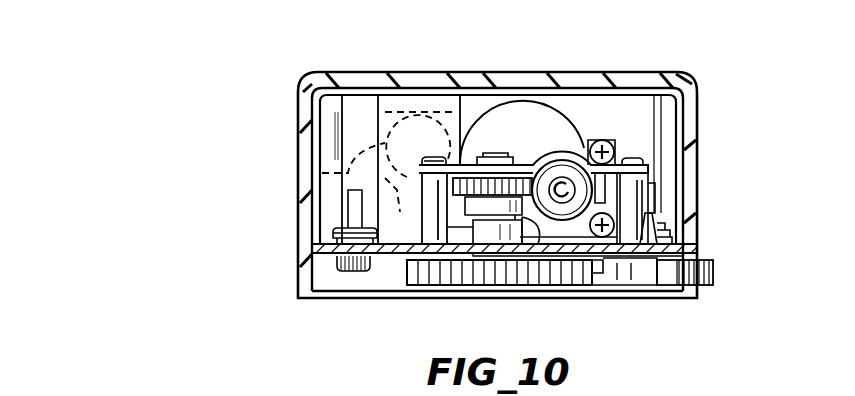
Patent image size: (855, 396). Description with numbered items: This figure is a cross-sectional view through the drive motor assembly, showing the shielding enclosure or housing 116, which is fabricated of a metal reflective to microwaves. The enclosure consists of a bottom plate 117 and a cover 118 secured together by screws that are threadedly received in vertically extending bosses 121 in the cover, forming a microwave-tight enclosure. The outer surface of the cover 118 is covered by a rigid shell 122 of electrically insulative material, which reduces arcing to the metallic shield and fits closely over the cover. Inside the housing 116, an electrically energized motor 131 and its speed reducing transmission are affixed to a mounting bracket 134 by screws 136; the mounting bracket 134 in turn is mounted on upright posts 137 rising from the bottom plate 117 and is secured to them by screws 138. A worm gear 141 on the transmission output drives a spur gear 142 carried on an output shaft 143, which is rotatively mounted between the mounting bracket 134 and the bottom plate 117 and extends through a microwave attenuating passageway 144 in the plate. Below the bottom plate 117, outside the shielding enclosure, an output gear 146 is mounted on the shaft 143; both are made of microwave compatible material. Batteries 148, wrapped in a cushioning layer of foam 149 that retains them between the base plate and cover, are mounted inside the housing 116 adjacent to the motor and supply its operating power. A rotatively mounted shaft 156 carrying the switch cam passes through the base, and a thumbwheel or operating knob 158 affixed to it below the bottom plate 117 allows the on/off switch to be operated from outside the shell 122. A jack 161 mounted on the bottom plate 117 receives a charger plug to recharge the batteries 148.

The shielding enclosure or housing 116 is at (312, 83).
The cover 118 is at (353, 92).
The vertically extending bosses 121 is at (330, 120).
The rigid shell 122 is at (377, 93).
The electrically energized motor 131 is at (494, 112).
The mounting bracket 134 is at (655, 177).
The screws 136 is at (606, 140).
The upright posts 137 is at (430, 207).
The screws 138 is at (431, 157).
The worm gear 141 is at (562, 162).
The spur gear 142 is at (522, 155).
The output shaft 143 is at (470, 262).
The microwave attenuating passageway 144 is at (523, 220).
The output gear 146 is at (497, 273).
The batteries 148 is at (320, 176).
The layer of foam 149 is at (385, 103).
The rotatively mounted shaft 156 is at (657, 208).
The thumbwheel or operating knob 158 is at (710, 287).
The jack 161 is at (340, 271).
The bottom plate 117 is at (397, 253).